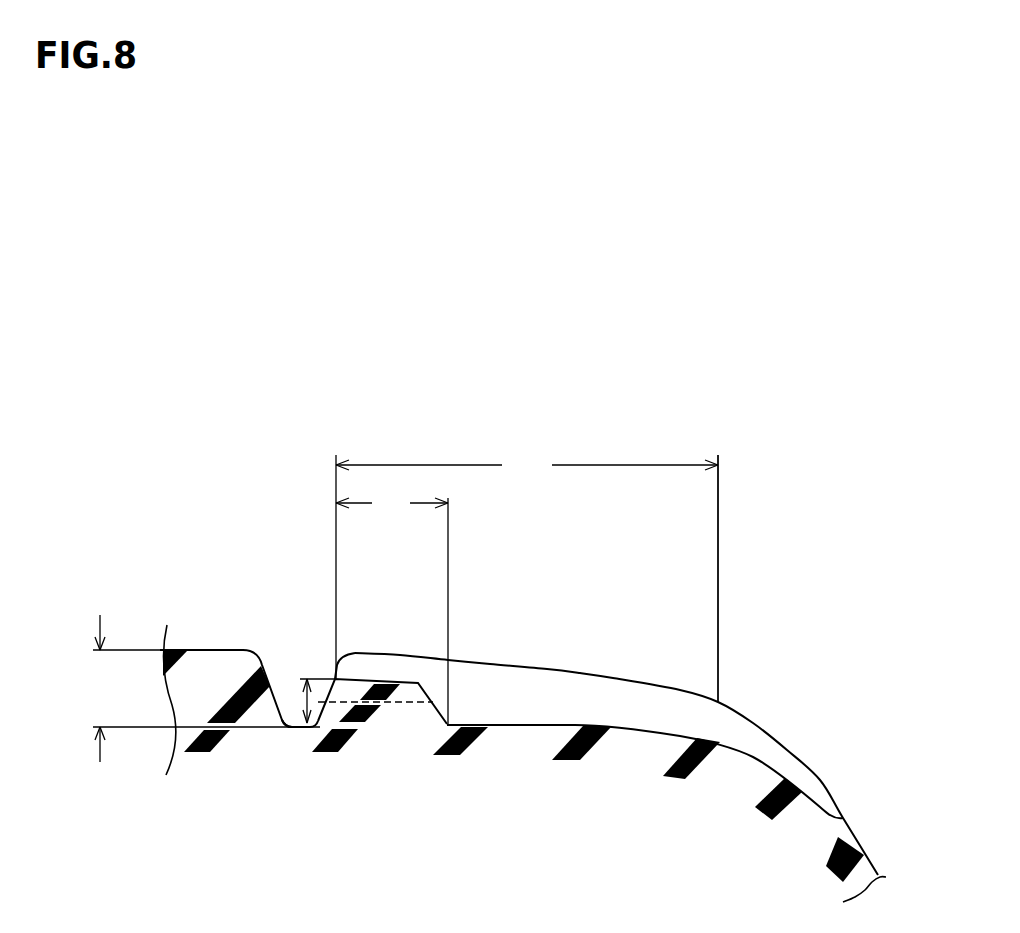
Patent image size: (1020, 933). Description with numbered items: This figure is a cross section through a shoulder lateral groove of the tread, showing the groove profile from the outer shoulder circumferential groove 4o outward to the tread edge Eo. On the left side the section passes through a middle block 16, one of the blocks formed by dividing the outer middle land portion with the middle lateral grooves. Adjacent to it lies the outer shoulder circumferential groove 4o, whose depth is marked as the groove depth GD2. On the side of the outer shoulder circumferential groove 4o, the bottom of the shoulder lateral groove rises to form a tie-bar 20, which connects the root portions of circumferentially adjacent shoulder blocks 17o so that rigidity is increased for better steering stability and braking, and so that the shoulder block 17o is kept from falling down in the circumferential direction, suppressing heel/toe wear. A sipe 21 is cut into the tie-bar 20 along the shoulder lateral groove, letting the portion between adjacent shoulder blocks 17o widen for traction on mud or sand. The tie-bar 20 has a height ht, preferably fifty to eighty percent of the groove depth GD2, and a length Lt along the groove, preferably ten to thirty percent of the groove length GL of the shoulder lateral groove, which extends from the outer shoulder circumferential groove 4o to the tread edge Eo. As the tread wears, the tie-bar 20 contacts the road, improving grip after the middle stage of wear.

The middle block 16 is at (207, 650).
The outer shoulder circumferential groove 4o is at (283, 652).
The tie-bar 20 is at (395, 683).
The sipe 21 is at (397, 702).
The shoulder block 17o is at (547, 668).
The groove depth of the outer shoulder circumferential groove GD2 is at (194, 688).
The height of the tie-bar ht is at (306, 701).
The length of the tie-bar Lt is at (392, 590).
The groove length of the shoulder lateral groove GL is at (527, 578).
The outer tread edge Eo is at (718, 606).